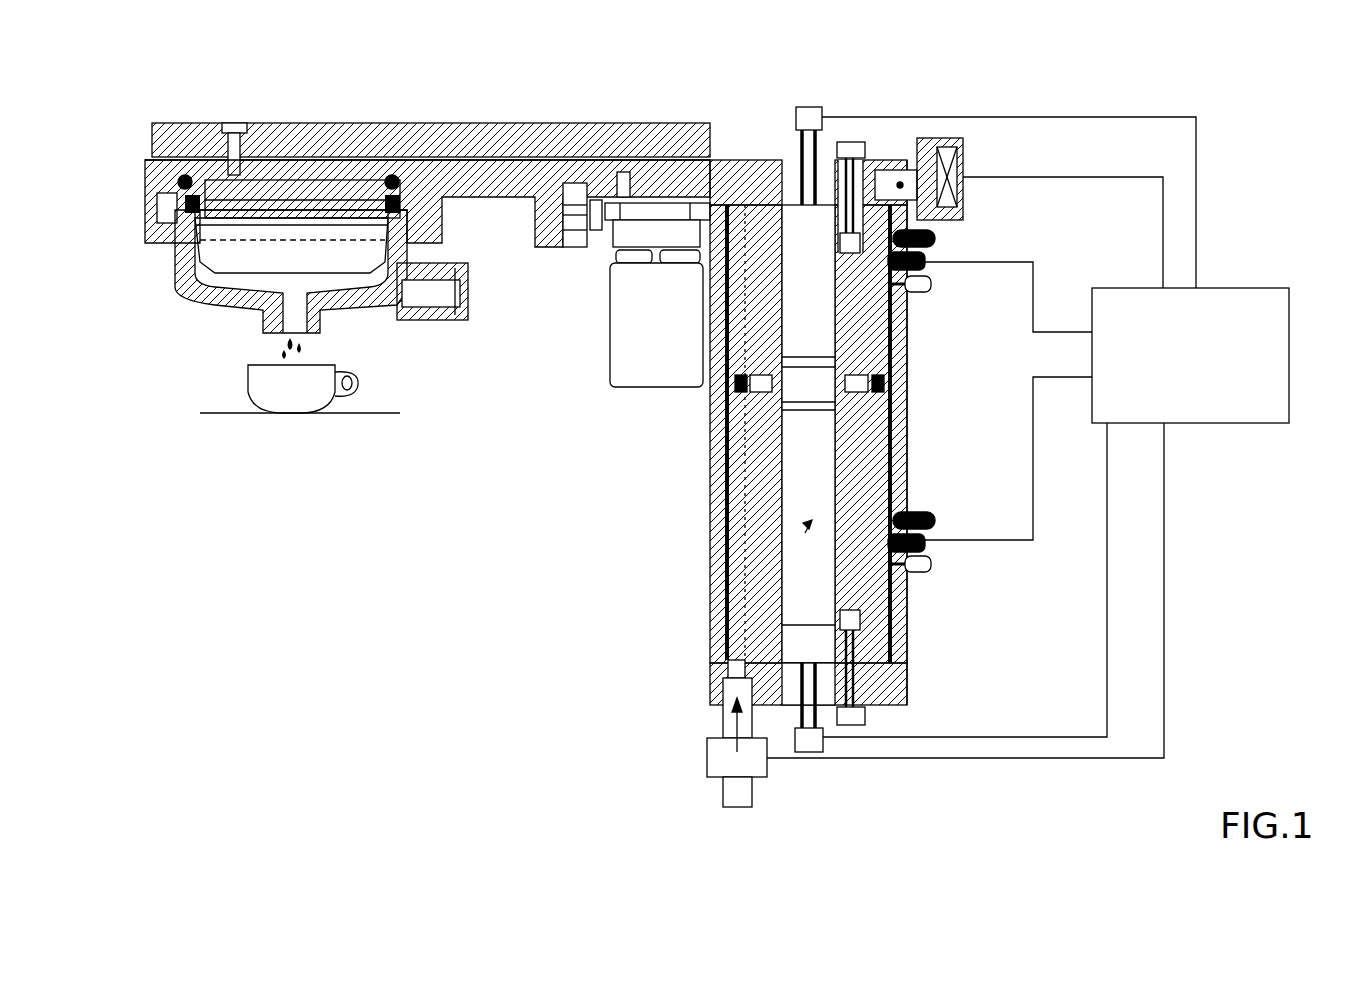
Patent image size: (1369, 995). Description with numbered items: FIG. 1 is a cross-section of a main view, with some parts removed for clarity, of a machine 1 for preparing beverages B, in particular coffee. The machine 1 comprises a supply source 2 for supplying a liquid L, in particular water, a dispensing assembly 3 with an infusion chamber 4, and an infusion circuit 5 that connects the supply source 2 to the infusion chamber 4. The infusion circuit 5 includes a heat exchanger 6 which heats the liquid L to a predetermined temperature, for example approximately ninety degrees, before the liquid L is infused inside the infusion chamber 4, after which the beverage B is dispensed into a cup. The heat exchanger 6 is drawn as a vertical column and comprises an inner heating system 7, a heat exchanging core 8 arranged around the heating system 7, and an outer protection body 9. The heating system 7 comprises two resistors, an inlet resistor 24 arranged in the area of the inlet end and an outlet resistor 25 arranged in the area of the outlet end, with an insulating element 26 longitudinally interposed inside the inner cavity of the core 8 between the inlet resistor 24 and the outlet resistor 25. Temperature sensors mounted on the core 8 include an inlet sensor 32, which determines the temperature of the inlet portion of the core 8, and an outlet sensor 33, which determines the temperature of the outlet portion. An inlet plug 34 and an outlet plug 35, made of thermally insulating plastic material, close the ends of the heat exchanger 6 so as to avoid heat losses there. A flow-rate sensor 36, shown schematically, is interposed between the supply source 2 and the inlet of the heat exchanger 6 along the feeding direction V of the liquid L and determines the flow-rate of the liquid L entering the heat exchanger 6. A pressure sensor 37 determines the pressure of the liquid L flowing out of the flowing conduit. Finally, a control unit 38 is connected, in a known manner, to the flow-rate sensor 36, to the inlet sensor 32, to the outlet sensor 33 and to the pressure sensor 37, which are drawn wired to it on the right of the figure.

The machine 1 is at (1268, 115).
The supply source 2 is at (737, 815).
The dispensing assembly 3 is at (190, 305).
The infusion chamber 4 is at (300, 268).
The infusion circuit 5 is at (658, 123).
The heat exchanger 6 is at (678, 510).
The inner heating system 7 is at (708, 578).
The heat exchanging core 8 is at (860, 478).
The outer protection body 9 is at (905, 625).
The inlet resistor 24 is at (708, 605).
The outlet resistor 25 is at (708, 330).
The insulating element 26 is at (708, 455).
The inlet sensor 32 is at (935, 540).
The outlet sensor 33 is at (935, 258).
The inlet plug 34 is at (905, 680).
The outlet plug 35 is at (748, 158).
The flow-rate sensor 36 is at (765, 778).
The pressure sensor 37 is at (970, 135).
The control unit 38 is at (1215, 425).
The beverages B is at (312, 352).
The liquid L is at (720, 785).
The feeding direction V is at (723, 732).